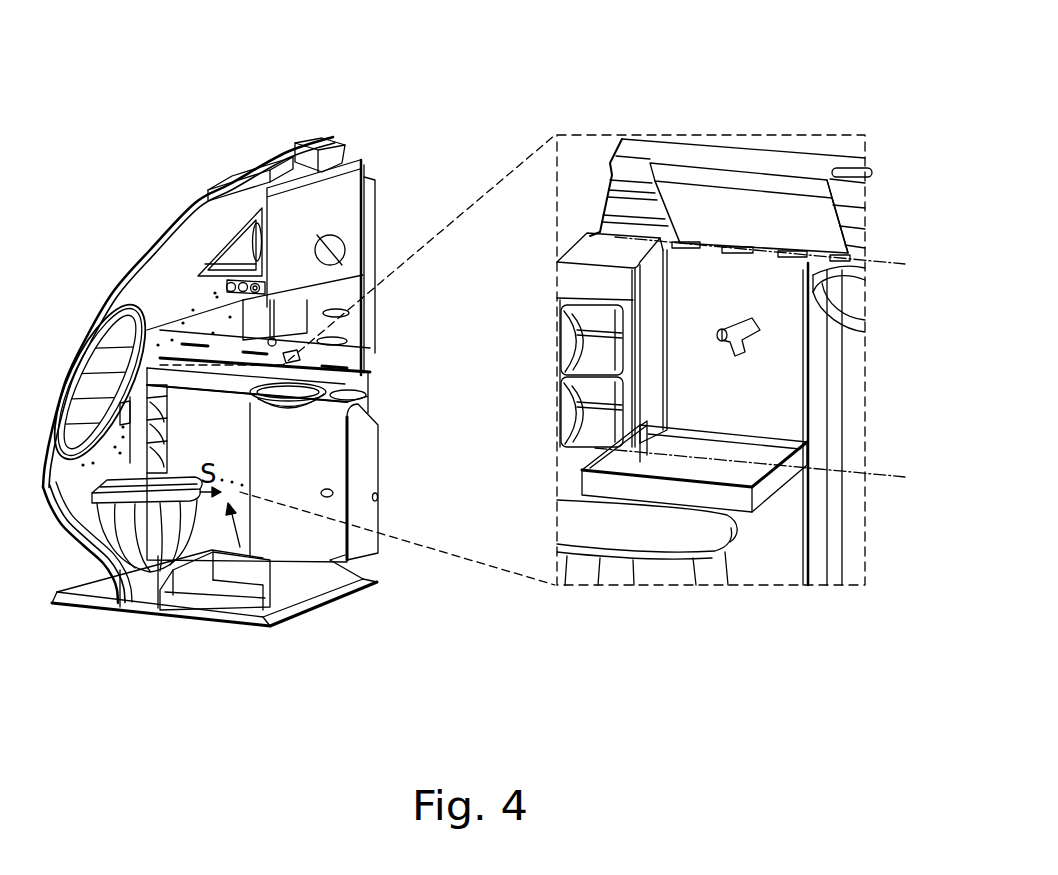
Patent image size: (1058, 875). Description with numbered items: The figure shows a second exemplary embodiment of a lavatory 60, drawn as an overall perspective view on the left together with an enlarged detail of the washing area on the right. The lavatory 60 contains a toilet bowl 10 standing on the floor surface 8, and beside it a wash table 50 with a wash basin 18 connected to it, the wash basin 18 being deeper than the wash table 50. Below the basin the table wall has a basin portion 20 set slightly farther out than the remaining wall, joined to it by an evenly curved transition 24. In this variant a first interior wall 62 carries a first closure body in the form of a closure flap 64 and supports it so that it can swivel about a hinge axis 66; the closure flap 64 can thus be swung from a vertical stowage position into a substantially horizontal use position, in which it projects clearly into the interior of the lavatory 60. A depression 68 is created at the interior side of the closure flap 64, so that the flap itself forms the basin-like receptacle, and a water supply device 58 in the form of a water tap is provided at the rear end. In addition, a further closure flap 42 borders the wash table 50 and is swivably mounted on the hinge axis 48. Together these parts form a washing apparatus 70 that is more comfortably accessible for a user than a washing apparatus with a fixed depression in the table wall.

The lavatory 60 is at (352, 93).
The wash table 50 is at (147, 345).
The wash basin 18 is at (290, 340).
The basin portion 20 is at (313, 548).
The toilet bowl 10 is at (158, 612).
The first interior wall 62 is at (232, 620).
The transition 24 is at (270, 612).
The floor surface 8 is at (263, 571).
The washing apparatus 70 is at (876, 123).
The further closure flap 42 is at (720, 178).
The hinge axis 48 is at (905, 262).
The water supply device 58 is at (760, 328).
The depression 68 is at (750, 472).
The hinge axis 66 is at (898, 475).
The closure flap 64 is at (773, 482).